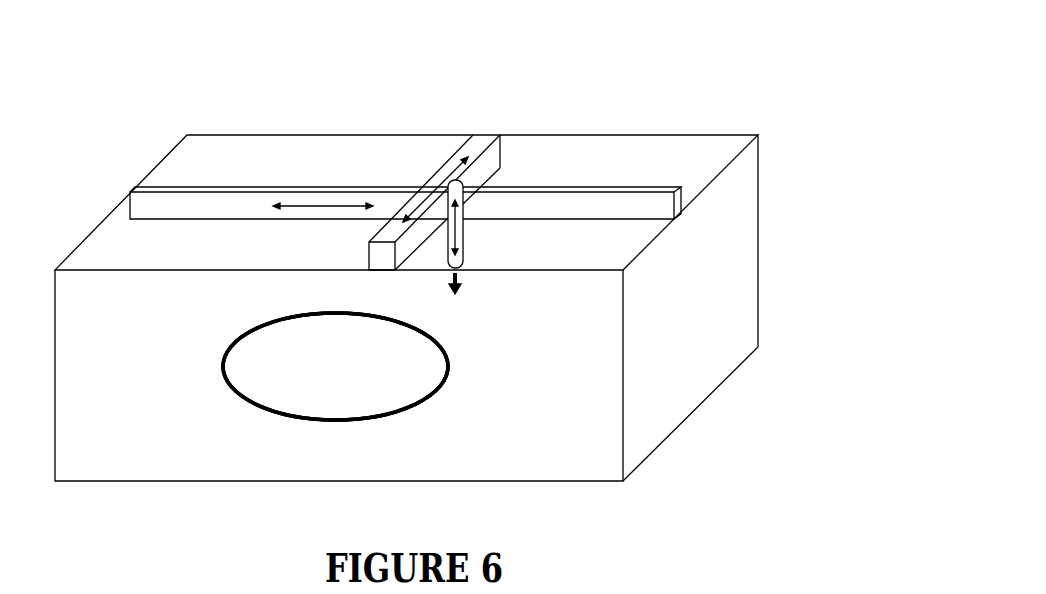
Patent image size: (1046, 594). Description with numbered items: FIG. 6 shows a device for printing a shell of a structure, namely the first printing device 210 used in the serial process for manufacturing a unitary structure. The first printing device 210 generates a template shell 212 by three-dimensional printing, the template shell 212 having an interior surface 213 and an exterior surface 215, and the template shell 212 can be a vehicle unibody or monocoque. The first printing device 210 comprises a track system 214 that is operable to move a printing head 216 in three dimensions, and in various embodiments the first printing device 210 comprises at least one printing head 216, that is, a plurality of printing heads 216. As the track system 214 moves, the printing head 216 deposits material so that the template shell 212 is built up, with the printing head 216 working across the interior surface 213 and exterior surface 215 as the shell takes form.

The first printing device 210 is at (414, 276).
The template shell 212 is at (395, 415).
The interior surface 213 is at (246, 338).
The track system 214 is at (394, 177).
The exterior surface 215 is at (419, 372).
The printing head 216 is at (465, 255).